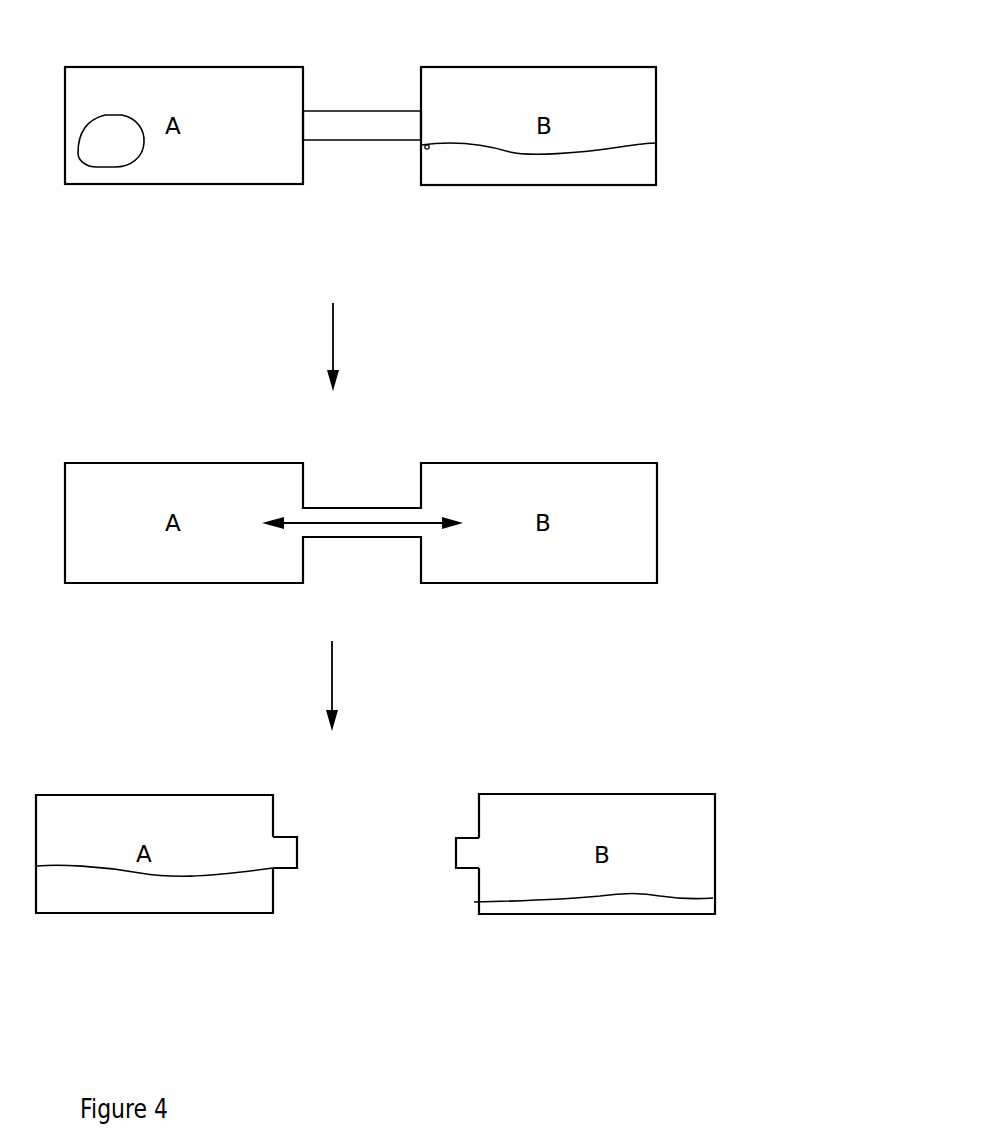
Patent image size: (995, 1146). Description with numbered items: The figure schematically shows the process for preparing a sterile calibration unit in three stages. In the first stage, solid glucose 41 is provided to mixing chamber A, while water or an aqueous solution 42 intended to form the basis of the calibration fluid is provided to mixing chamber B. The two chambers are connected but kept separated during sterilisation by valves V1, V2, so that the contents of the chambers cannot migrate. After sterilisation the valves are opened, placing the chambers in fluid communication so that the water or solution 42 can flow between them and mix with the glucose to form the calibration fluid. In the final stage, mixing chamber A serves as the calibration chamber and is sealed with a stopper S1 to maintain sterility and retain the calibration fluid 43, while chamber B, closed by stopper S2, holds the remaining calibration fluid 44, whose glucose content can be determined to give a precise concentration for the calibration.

The solid glucose 41 is at (107, 137).
The water or aqueous solution 42 is at (568, 167).
The liquid remaining in container A 43 is at (214, 889).
The remaining calibration fluid 44 is at (695, 900).
The valve V1 is at (302, 124).
The valve V2 is at (418, 126).
The stopper S1 is at (300, 854).
The second seal S2 is at (453, 854).